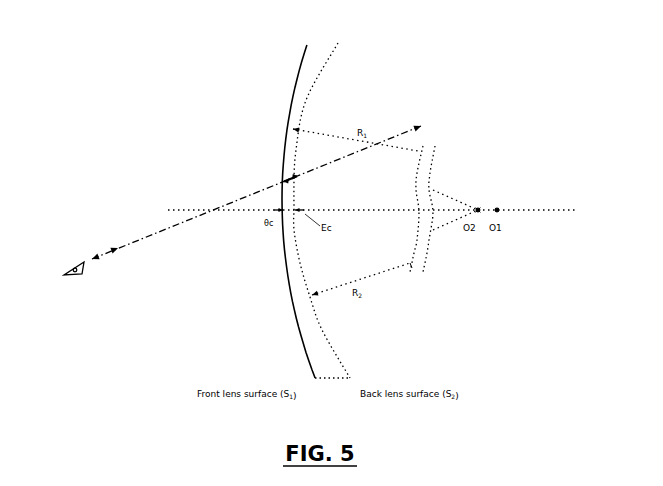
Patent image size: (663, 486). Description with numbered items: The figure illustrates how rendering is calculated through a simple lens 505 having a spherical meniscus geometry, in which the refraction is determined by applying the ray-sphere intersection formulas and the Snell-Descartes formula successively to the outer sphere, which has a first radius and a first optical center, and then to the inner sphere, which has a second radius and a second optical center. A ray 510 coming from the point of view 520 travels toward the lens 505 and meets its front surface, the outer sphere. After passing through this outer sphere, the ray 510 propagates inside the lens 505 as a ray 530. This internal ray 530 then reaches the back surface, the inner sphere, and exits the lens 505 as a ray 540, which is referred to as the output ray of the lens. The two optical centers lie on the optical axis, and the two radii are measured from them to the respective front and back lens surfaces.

The lens 505 is at (293, 98).
The ray 510 is at (153, 233).
The point of view 520 is at (73, 282).
The ray 530 is at (285, 178).
The ray 540 is at (410, 128).